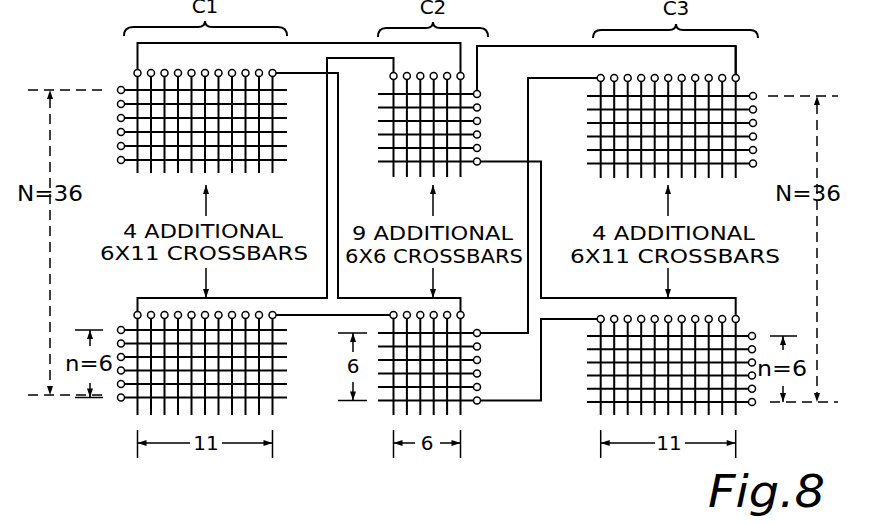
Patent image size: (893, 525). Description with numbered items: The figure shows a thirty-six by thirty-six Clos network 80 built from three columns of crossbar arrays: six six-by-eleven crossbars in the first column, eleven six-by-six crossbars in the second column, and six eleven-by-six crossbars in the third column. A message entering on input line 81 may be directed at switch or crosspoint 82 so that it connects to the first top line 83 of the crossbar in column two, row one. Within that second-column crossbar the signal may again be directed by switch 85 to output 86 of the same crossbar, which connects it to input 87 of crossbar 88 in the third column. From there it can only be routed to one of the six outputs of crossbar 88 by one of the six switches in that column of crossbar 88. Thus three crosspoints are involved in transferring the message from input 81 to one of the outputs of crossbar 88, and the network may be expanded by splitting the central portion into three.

The three-stage crossbar switching network 80 is at (92, 248).
The input line 81 is at (121, 330).
The switch or crosspoint 82 is at (134, 328).
The first top line of crossbar 83 is at (403, 73).
The switch 85 is at (392, 93).
The output of crossbar 86 is at (480, 93).
The input of crossbar 87 is at (740, 77).
The crossbar 88 is at (756, 150).